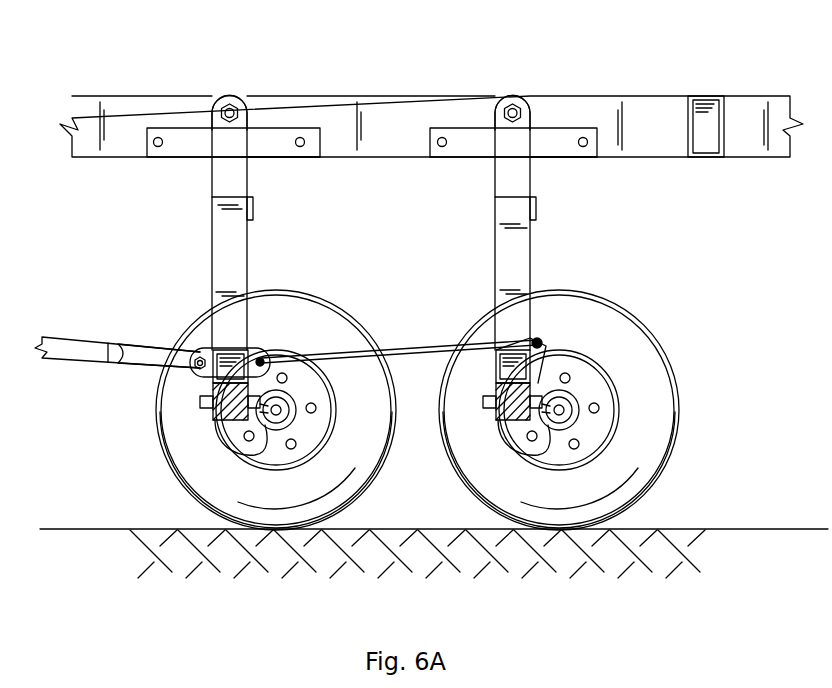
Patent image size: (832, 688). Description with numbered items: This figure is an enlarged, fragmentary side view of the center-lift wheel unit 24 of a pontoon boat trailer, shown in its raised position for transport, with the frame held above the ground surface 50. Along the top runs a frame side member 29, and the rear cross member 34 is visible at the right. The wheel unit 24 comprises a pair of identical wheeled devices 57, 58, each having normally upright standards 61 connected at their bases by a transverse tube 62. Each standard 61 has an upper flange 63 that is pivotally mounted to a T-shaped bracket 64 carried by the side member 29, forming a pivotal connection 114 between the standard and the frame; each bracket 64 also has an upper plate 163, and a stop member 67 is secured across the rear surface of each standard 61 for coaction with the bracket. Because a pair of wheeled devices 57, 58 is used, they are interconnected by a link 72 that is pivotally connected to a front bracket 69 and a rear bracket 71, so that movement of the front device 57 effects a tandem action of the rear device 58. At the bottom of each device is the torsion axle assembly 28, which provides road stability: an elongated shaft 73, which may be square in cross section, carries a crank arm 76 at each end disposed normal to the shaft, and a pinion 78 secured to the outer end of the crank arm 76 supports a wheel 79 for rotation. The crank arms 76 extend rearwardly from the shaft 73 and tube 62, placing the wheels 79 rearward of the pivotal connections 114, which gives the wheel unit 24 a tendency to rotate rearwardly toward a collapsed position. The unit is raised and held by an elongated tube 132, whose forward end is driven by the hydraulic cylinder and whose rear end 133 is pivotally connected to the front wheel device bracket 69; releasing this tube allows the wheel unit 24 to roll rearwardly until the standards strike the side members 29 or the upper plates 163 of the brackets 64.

The wheel unit 24 is at (157, 198).
The torsion axle assembly 28 is at (183, 408).
The side member 29 is at (652, 100).
The rear cross member 34 is at (728, 103).
The ground surface 50 is at (715, 528).
The wheeled device 57 is at (197, 272).
The wheeled device 58 is at (562, 270).
The standard 61 is at (242, 267).
The transverse tube 62 is at (222, 350).
The upper flange 63 is at (212, 130).
The T-shaped bracket 64 is at (262, 118).
The stop member 67 is at (253, 199).
The bracket 69 is at (258, 350).
The bracket 71 is at (512, 343).
The link 72 is at (418, 346).
The shaft 73 is at (230, 426).
The crank arm 76 is at (265, 440).
The pinion 78 is at (292, 400).
The wheel 79 is at (197, 493).
The pivotal connection 114 is at (232, 106).
The elongated tube 132 is at (62, 345).
The rear end 133 is at (140, 350).
The upper plate 163 is at (290, 129).